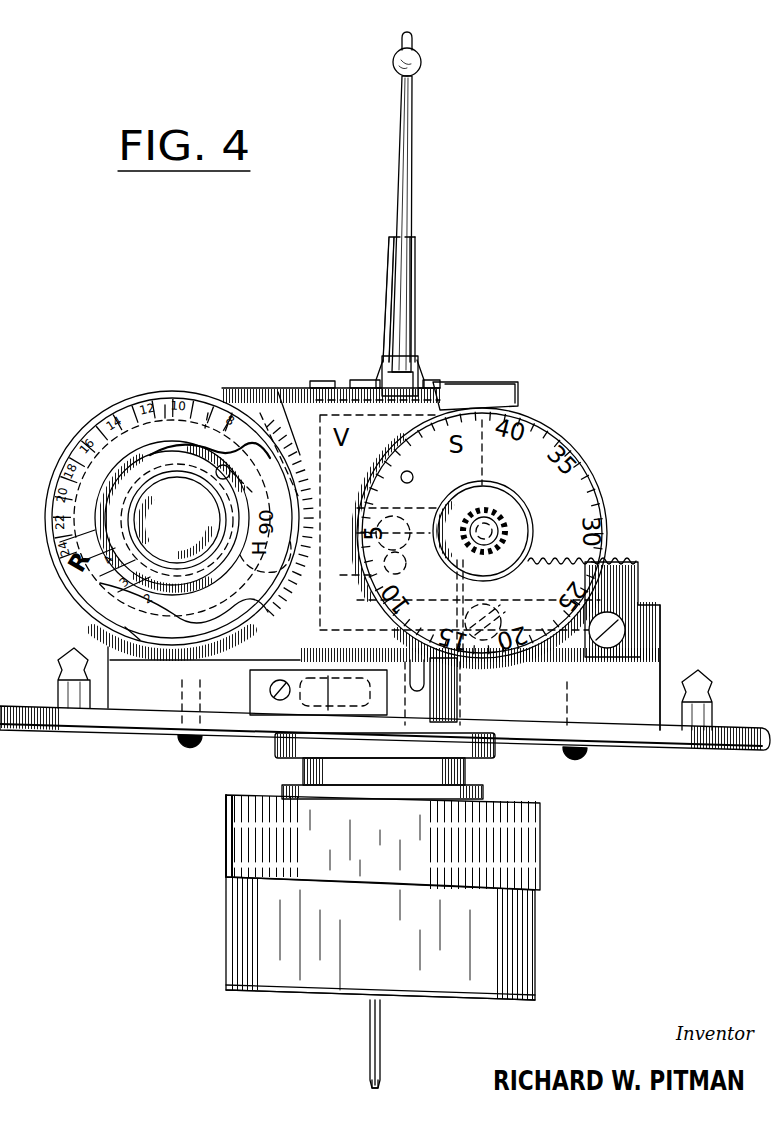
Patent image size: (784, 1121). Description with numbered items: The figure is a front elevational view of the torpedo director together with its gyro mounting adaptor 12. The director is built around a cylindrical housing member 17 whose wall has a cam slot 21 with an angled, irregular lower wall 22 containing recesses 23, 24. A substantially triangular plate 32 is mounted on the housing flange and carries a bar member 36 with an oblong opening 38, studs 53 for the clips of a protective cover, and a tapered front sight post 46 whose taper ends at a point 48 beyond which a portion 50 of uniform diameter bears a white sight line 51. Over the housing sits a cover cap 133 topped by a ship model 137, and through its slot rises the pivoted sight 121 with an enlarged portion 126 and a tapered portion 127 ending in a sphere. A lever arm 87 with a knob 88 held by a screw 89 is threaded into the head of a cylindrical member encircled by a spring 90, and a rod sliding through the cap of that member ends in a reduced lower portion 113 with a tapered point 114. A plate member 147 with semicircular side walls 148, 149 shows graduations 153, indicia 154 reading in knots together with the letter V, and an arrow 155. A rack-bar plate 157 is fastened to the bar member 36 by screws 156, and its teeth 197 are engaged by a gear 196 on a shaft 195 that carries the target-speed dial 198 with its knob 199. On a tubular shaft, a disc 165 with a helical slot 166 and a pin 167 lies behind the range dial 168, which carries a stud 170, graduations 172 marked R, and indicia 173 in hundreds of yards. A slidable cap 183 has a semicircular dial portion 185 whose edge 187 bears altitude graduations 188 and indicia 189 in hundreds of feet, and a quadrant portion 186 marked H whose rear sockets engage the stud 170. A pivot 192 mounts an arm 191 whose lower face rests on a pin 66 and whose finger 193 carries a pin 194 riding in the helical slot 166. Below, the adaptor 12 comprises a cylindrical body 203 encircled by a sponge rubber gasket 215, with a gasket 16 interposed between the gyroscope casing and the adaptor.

The adaptor 12 is at (354, 904).
The gasket 16 is at (232, 993).
The cylindrical housing member 17 is at (465, 778).
The cam slot 21 is at (372, 664).
The lower wall of cam slot 22 is at (408, 688).
The recess 23 is at (360, 760).
The recess 24 is at (495, 746).
The plate 32 is at (648, 742).
The bar member 36 is at (655, 660).
The oblong opening 38 is at (450, 692).
The tapered front sight post 46 is at (389, 268).
The point of tapered portion 48 is at (394, 240).
The portion of front sight post 50 is at (421, 58).
The white sight line 51 is at (412, 34).
The studs 53 is at (60, 654).
The pin 66 is at (460, 574).
The lever arm 87 is at (328, 690).
The knob 88 is at (288, 704).
The screw 89 is at (273, 702).
The spring 90 is at (306, 515).
The lower portion of rod 113 is at (370, 1036).
The tapered end 114 is at (372, 1083).
The pivoted sight member 121 is at (408, 272).
The enlarged portion 126 is at (412, 372).
The tapered portion 127 is at (412, 166).
The cover cap 133 is at (480, 427).
The ship model 137 is at (495, 388).
The plate member 147 is at (316, 400).
The side wall 148 is at (233, 410).
The side wall 149 is at (440, 398).
The graduations 153 is at (260, 413).
The indicia 154 is at (278, 392).
The arrow 155 is at (375, 452).
The screws 156 is at (613, 636).
The rack-bar plate 157 is at (628, 592).
The disc 165 is at (113, 413).
The helical slot 166 is at (160, 395).
The pin 167 is at (216, 470).
The dial 168 is at (60, 542).
The stud 170 is at (272, 565).
The graduations 172 is at (92, 442).
The indicia 173 is at (77, 462).
The slidable cap 183 is at (152, 498).
The semi-circular dial portion 185 is at (80, 562).
The quadrant portion 186 is at (215, 618).
The edge of dial 187 is at (100, 576).
The graduations 188 is at (118, 592).
The numerical indicia 189 is at (125, 627).
The arm 191 is at (237, 472).
The pivot 192 is at (444, 540).
The finger 193 is at (208, 413).
The pin 194 is at (165, 405).
The shaft 195 is at (458, 506).
The gear 196 is at (560, 497).
The teeth 197 is at (620, 562).
The dial 198 is at (553, 453).
The knob 199 is at (504, 500).
The cylindrical body 203 is at (242, 942).
The sponge rubber gasket 215 is at (242, 836).